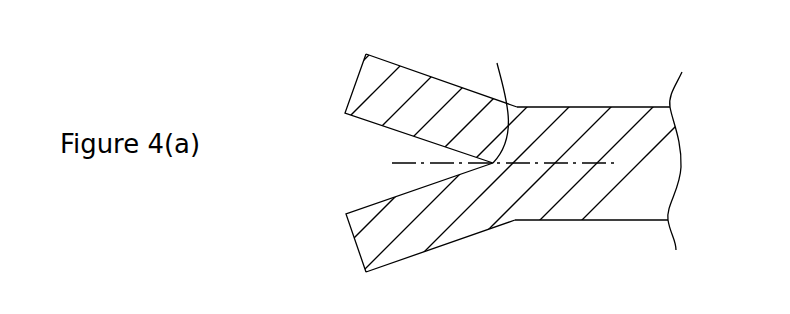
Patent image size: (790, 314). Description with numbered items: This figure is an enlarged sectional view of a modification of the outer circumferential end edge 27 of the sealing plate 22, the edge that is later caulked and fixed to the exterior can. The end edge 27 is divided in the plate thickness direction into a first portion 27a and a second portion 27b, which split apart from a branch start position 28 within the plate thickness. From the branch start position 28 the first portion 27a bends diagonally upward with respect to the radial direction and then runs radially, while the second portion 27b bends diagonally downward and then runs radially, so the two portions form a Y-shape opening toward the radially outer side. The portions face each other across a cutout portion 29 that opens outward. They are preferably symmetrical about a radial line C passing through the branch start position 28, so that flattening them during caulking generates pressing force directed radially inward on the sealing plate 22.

The sealing plate 22 is at (608, 84).
The outer circumferential end edge 27 is at (423, 74).
The first portion 27a is at (350, 86).
The second portion 27b is at (354, 242).
The branch start position 28 is at (500, 98).
The cutout portion 29 is at (372, 161).
The radial line C is at (558, 170).